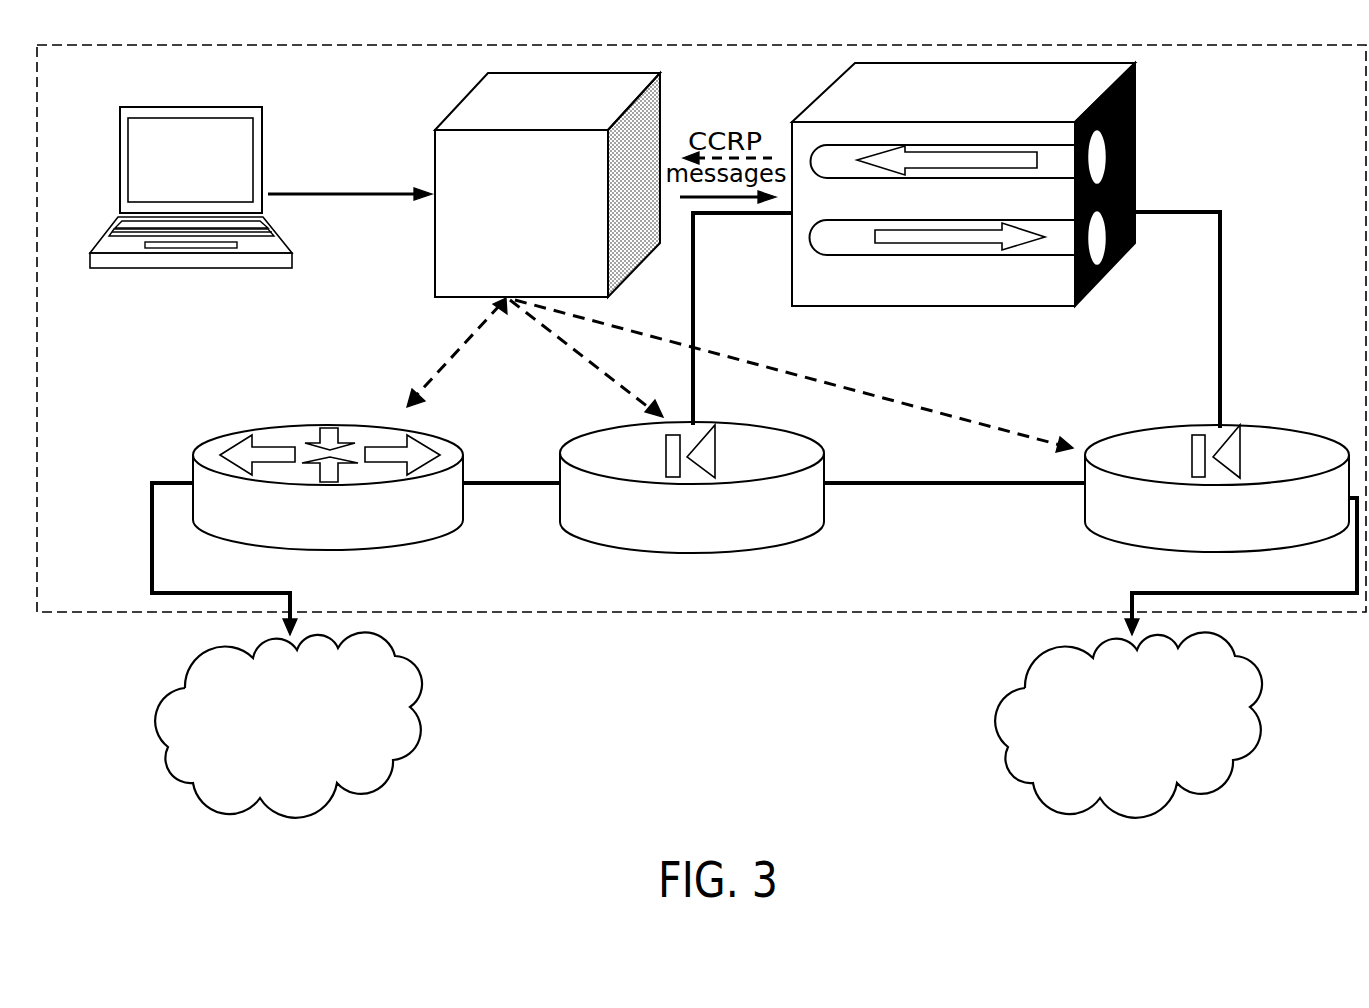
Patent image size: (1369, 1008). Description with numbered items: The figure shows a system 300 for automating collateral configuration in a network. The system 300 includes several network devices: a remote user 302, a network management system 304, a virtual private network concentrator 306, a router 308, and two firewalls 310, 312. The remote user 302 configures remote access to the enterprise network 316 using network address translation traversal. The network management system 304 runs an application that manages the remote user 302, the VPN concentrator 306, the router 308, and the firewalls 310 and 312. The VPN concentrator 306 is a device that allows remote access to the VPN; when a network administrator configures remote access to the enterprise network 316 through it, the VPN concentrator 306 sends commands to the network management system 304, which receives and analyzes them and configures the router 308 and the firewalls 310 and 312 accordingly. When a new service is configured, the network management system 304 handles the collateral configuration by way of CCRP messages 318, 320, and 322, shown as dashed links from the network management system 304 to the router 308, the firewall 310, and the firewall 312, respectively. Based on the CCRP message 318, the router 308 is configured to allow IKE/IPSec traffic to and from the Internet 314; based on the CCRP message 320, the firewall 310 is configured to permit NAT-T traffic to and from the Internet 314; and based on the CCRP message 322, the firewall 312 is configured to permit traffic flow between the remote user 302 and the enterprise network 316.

The system 300 is at (704, 612).
The remote user 302 is at (120, 107).
The network management system 304 is at (433, 128).
The virtual private network concentrator 306 is at (795, 118).
The router 308 is at (197, 450).
The firewall 310 is at (598, 430).
The firewall 312 is at (1107, 437).
The Internet 314 is at (160, 717).
The enterprise network 316 is at (1002, 728).
The CCRP message 318 is at (470, 337).
The CCRP message 320 is at (604, 367).
The CCRP message 322 is at (735, 357).